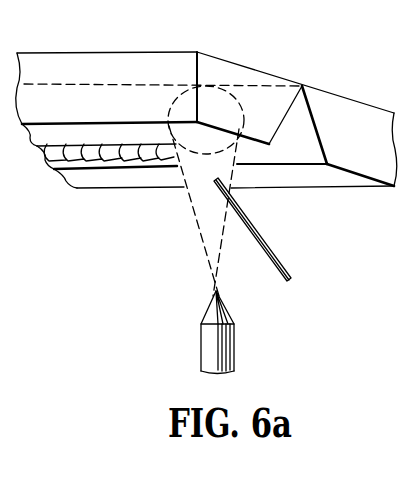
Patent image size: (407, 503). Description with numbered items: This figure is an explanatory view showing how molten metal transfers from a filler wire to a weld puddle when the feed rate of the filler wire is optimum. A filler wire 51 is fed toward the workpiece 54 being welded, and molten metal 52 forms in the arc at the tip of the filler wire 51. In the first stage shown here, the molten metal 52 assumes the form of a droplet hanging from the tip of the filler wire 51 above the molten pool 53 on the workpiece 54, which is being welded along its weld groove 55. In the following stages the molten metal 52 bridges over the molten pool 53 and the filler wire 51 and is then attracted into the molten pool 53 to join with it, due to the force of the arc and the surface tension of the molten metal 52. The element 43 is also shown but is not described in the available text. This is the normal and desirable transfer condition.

The stylus 43 is at (222, 358).
The filler wire 51 is at (244, 230).
The molten metal 52 is at (206, 180).
The molten pool 53 is at (182, 109).
The workpiece 54 is at (310, 95).
The weld groove 55 is at (294, 135).